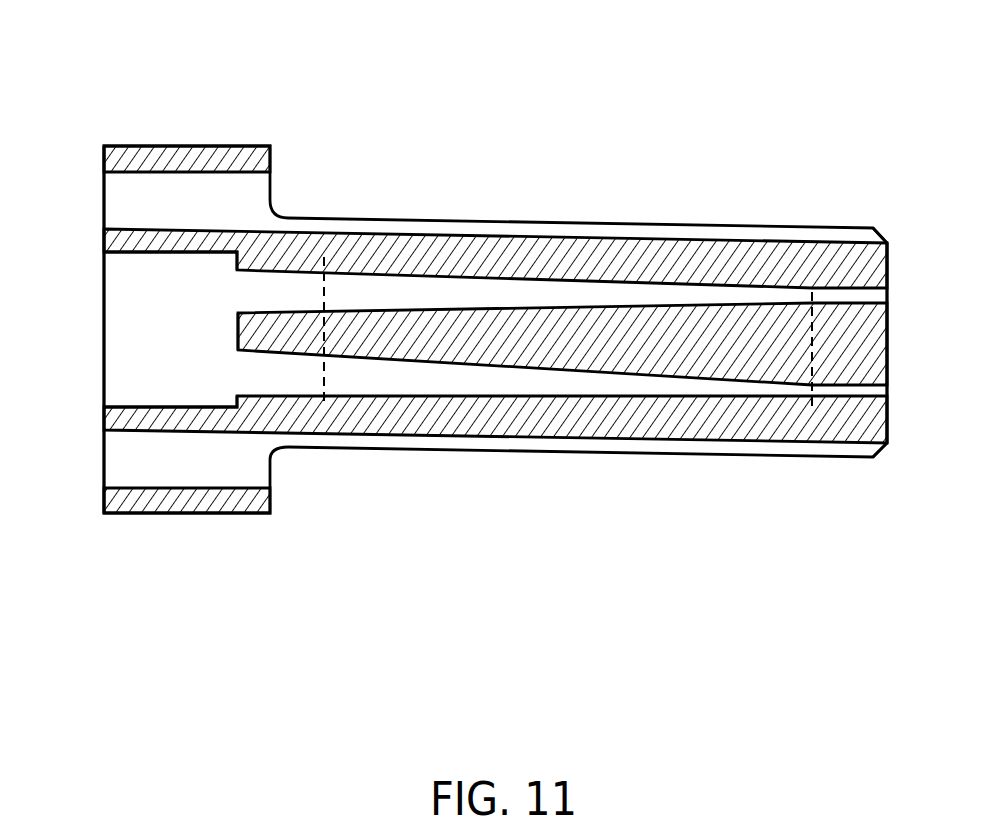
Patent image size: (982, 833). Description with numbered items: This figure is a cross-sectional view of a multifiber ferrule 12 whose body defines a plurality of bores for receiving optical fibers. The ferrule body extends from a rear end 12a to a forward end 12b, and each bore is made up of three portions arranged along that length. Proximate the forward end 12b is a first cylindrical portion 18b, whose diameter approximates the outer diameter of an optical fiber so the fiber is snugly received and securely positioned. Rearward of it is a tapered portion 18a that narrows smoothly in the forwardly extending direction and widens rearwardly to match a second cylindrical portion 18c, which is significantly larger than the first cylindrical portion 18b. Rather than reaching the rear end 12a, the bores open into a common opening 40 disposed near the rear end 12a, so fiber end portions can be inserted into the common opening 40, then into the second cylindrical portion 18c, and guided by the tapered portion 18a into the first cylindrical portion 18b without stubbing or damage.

The multifiber ferrule 12 is at (514, 125).
The rear end of the ferrule body 12a is at (102, 233).
The forward end of the ferrule body 12b is at (888, 423).
The tapered portion 18a is at (565, 280).
The first cylindrical portion 18b is at (847, 287).
The second cylindrical portion 18c is at (288, 270).
The common opening 40 is at (130, 363).